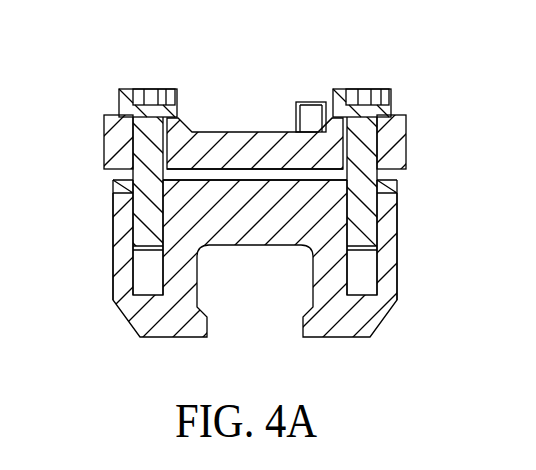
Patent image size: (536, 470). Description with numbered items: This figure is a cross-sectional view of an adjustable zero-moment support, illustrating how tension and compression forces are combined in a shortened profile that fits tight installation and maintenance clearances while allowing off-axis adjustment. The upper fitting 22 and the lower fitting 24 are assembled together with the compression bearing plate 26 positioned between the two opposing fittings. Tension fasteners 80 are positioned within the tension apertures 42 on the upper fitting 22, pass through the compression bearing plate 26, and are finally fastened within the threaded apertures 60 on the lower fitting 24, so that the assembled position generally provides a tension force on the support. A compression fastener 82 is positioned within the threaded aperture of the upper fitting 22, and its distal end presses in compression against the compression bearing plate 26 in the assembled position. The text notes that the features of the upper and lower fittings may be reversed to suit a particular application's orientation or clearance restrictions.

The upper fitting 22 is at (276, 161).
The lower fitting 24 is at (239, 231).
The compression bearing plate 26 is at (397, 180).
The tension apertures 42 is at (105, 136).
The threaded apertures 60 is at (118, 228).
The tension fasteners 80 is at (131, 90).
The compression fastener 82 is at (303, 101).